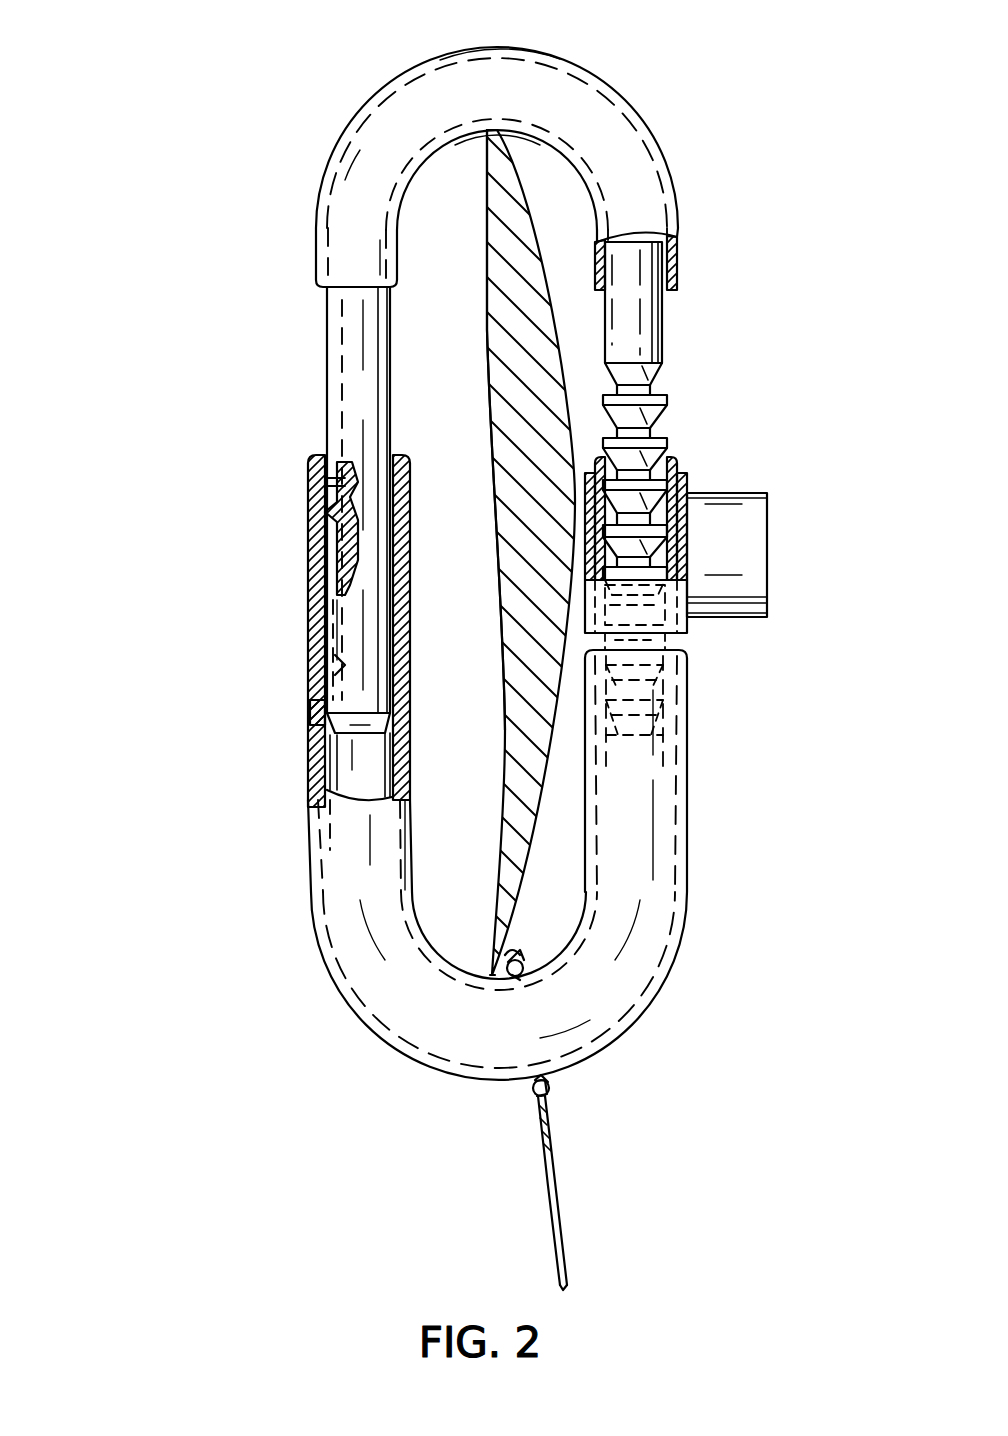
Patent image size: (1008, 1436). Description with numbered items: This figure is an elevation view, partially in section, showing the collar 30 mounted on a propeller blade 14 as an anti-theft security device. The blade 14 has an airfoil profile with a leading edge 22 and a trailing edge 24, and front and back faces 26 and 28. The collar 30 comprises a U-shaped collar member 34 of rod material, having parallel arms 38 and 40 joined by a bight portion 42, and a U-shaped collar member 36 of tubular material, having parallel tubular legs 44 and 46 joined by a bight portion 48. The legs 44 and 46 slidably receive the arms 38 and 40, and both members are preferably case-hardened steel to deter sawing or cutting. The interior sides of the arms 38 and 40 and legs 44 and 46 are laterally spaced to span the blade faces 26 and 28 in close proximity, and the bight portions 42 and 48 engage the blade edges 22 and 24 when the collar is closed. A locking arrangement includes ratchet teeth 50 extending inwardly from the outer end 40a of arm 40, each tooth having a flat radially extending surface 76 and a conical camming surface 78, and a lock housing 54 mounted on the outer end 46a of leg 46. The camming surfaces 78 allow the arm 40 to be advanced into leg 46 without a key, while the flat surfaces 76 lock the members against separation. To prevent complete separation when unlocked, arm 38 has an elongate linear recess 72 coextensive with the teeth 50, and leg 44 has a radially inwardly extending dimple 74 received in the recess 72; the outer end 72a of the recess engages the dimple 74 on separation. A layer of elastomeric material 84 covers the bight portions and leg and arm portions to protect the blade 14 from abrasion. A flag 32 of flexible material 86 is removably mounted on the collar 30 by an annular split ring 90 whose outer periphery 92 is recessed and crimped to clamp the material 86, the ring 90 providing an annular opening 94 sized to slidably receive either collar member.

The propeller blade 14 is at (545, 240).
The leading edge 22 is at (497, 130).
The trailing edge 24 is at (492, 975).
The front face 26 is at (527, 187).
The back face 28 is at (487, 215).
The collar 30 is at (222, 442).
The flag 32 is at (568, 1240).
The U-shaped collar member 34 is at (322, 170).
The U-shaped collar member 36 is at (325, 978).
The arm 38 is at (352, 333).
The arm 40 is at (655, 310).
The outer end of arm 40a is at (653, 712).
The bight portion 42 is at (440, 95).
The tubular leg 44 is at (322, 768).
The tubular leg 46 is at (665, 636).
The outer end of leg 46a is at (670, 462).
The bight portion 48 is at (583, 1007).
The ratchet teeth 50 is at (665, 393).
The lock housing 54 is at (772, 517).
The elongate linear recess 72 is at (338, 397).
The outer end of recess 72a is at (340, 665).
The dimple 74 is at (333, 518).
The flat radially extending surface 76 is at (672, 393).
The conical camming surface 78 is at (665, 417).
The layer of elastomeric material 84 is at (672, 265).
The flexible flag material 86 is at (550, 1120).
The annular split ring 90 is at (530, 1086).
The outer periphery of ring 92 is at (536, 1094).
The annular opening 94 is at (522, 972).